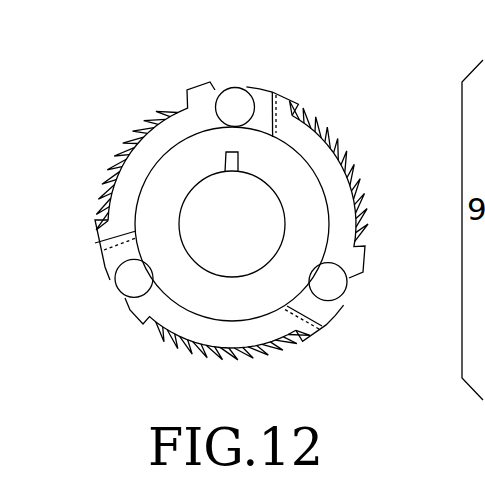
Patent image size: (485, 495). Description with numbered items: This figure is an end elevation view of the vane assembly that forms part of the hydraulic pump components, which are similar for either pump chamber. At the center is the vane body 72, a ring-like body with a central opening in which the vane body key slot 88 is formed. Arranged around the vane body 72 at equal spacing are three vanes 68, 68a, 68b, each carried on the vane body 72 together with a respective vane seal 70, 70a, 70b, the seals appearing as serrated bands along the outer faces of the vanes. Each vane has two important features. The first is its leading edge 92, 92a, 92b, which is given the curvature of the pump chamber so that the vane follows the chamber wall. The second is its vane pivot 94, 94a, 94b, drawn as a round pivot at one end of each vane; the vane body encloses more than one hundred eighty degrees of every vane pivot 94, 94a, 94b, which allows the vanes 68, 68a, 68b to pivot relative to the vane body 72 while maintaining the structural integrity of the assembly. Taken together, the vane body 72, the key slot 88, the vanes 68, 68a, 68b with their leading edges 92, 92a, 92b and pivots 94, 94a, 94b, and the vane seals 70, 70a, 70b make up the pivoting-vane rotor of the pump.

The vane 68 is at (152, 148).
The vane 68a is at (197, 331).
The vane 68b is at (327, 168).
The vane seal 70 is at (108, 195).
The vane seal 70a is at (267, 358).
The vane seal 70b is at (363, 216).
The vane body 72 is at (157, 240).
The vane body key slot 88 is at (238, 152).
The leading edge 92 is at (95, 243).
The leading edge 92a is at (312, 328).
The leading edge 92b is at (283, 94).
The vane pivot 94 is at (230, 105).
The vane pivot 94a is at (131, 280).
The vane pivot 94b is at (332, 282).